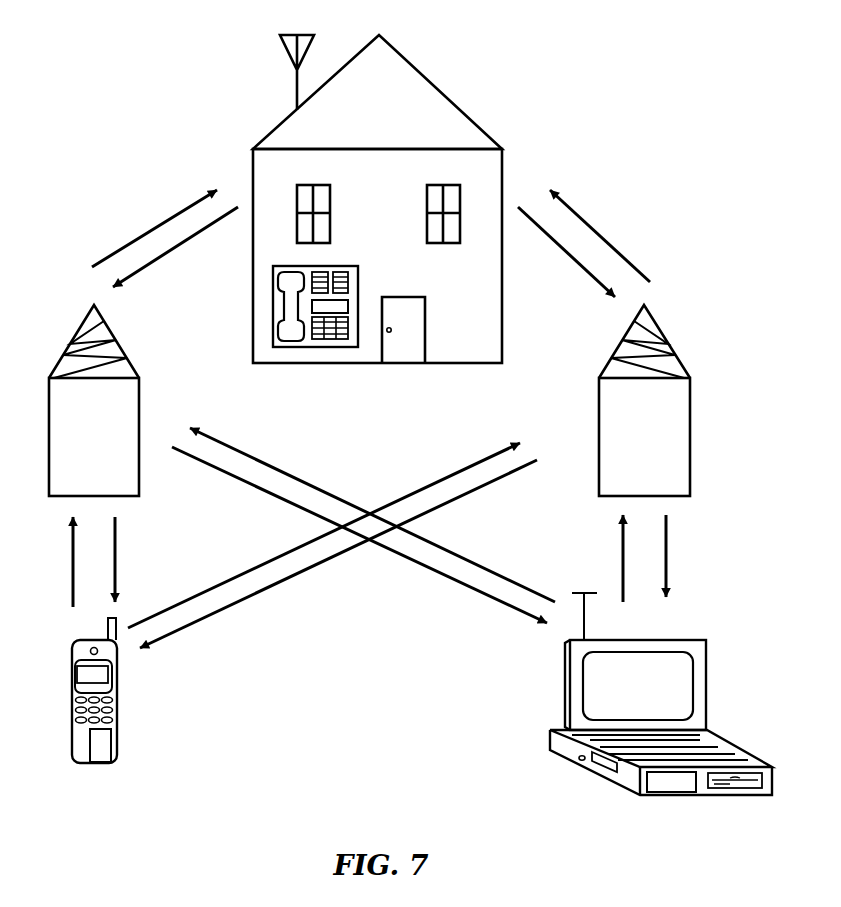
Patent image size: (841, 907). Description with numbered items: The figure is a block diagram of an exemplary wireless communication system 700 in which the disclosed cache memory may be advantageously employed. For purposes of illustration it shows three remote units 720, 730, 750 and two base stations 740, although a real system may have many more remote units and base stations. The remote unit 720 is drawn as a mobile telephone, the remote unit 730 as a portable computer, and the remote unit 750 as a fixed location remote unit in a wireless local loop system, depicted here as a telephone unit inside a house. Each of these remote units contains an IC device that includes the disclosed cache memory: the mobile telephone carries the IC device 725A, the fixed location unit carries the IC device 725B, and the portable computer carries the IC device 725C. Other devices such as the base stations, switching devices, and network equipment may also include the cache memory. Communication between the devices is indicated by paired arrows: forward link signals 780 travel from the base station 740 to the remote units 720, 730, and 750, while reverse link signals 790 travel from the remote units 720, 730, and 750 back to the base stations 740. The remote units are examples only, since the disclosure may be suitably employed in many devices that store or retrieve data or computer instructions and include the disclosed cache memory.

The wireless communication system 700 is at (102, 66).
The remote unit 720 is at (73, 648).
The IC device 725A is at (104, 748).
The IC device 725B is at (340, 305).
The IC device 725C is at (678, 782).
The remote unit 730 is at (686, 640).
The base station 740 is at (73, 340).
The remote unit 750 is at (273, 316).
The forward link signals 780 is at (158, 222).
The reverse link signals 790 is at (162, 258).